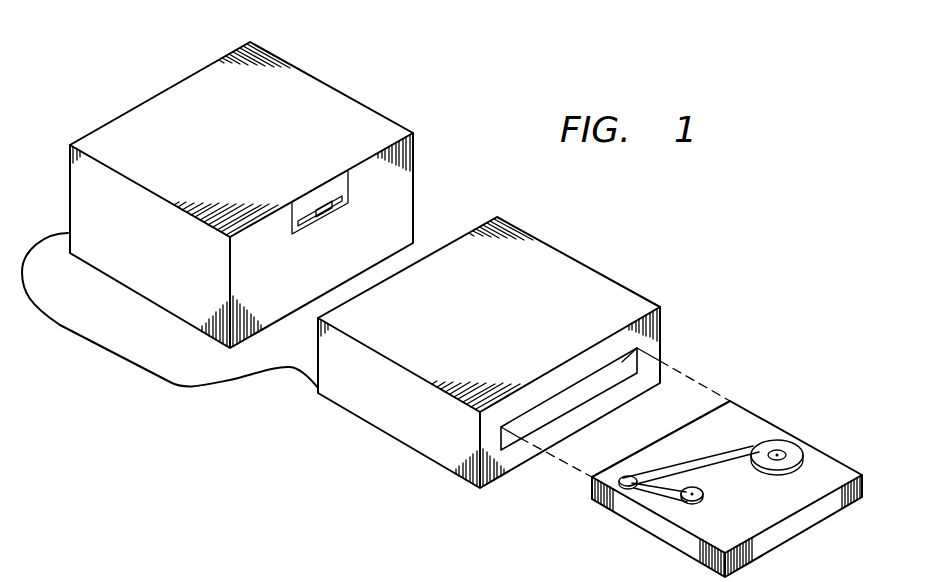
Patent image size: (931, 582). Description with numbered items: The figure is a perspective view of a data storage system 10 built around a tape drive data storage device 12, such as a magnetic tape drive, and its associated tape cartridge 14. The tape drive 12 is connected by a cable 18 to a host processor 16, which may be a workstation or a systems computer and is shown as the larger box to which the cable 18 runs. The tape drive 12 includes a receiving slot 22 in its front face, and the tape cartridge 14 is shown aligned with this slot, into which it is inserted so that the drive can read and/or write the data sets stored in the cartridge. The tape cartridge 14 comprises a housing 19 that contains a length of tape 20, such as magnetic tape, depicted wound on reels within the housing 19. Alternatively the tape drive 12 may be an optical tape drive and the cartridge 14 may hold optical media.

The host computer system 10 is at (343, 65).
The tape drive data storage device 12 is at (568, 227).
The tape cartridge 14 is at (784, 405).
The host processor 16 is at (141, 108).
The cable 18 is at (197, 384).
The housing 19 is at (790, 533).
The tape 20 is at (707, 463).
The receiving slot 22 is at (592, 388).